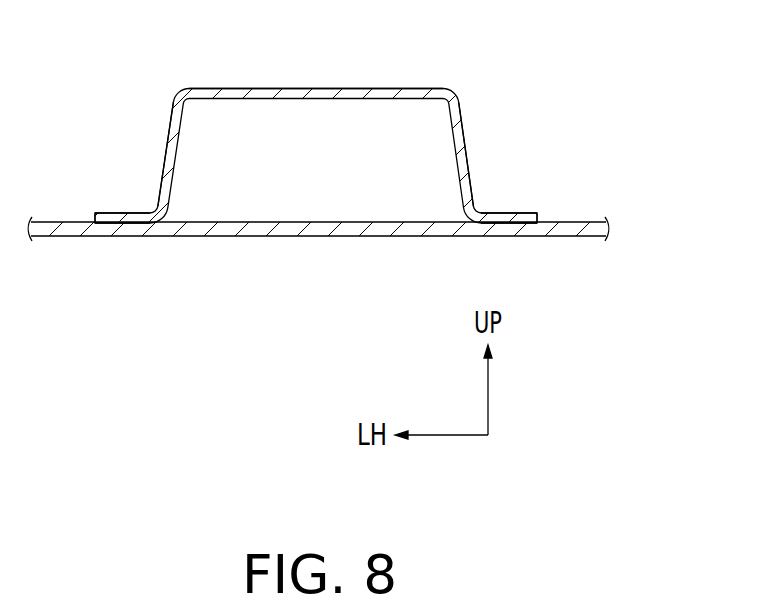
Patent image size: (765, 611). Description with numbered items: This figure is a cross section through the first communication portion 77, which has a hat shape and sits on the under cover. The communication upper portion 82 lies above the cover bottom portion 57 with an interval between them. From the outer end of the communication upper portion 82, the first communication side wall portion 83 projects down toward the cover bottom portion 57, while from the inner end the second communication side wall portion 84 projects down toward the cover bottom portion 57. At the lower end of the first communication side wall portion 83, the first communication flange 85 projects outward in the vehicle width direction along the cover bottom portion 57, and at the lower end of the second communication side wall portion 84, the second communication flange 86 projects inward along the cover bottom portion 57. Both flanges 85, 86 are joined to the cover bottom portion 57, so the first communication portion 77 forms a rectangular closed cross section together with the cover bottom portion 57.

The first communication portion 77 is at (340, 121).
The communication upper portion 82 is at (387, 88).
The first communication side wall portion 83 is at (164, 150).
The second communication side wall portion 84 is at (467, 137).
The first communication flange 85 is at (120, 213).
The second communication flange 86 is at (503, 213).
The cover bottom portion 57 is at (255, 237).